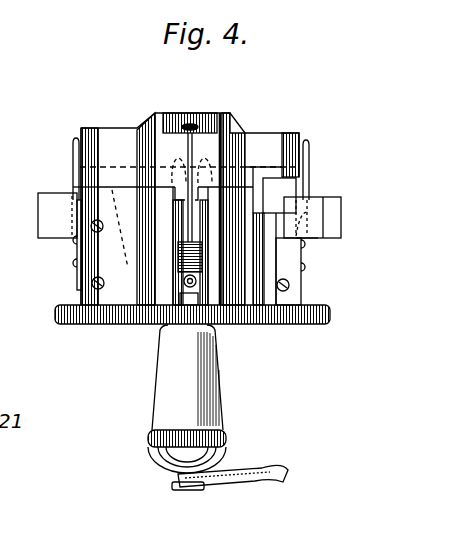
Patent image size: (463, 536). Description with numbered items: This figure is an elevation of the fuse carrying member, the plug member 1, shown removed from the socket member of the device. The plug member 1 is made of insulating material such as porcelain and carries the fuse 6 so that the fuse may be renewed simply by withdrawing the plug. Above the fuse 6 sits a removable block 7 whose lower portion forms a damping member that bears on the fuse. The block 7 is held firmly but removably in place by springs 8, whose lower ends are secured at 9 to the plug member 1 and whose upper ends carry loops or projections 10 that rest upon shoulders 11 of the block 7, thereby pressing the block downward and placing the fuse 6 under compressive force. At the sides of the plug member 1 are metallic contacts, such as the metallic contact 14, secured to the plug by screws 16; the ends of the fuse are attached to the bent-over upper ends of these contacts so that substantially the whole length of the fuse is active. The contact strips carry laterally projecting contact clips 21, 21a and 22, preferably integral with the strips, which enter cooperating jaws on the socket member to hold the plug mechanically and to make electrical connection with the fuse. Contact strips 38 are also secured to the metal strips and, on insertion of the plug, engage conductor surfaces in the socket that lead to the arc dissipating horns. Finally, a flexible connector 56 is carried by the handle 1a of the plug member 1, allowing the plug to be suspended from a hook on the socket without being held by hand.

The plug member 1 is at (133, 320).
The handle 1a is at (173, 390).
The fuse 6 is at (127, 165).
The removable block 7 is at (268, 138).
The springs 8 is at (198, 240).
The securing point of the springs 9 is at (202, 293).
The loops or projections 10 is at (193, 128).
The shoulders 11 is at (217, 113).
The metallic contact 14 is at (266, 325).
The screws 16 is at (290, 289).
The contact clip 21 is at (338, 221).
The contact clip 21a is at (50, 218).
The contact clip 22 is at (314, 238).
The contact strips 38 is at (73, 163).
The flexible connector 56 is at (243, 484).